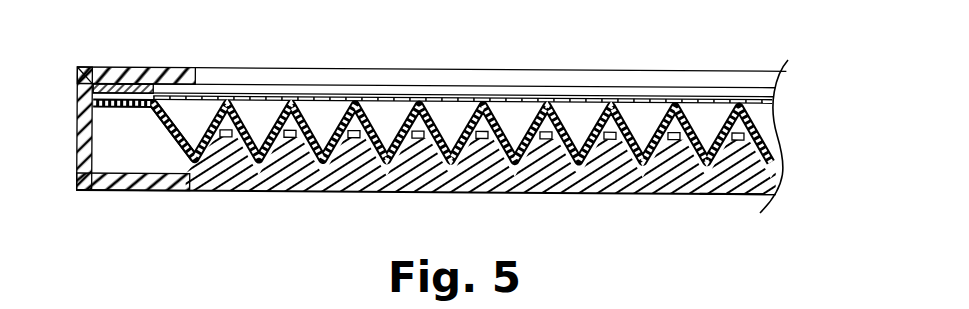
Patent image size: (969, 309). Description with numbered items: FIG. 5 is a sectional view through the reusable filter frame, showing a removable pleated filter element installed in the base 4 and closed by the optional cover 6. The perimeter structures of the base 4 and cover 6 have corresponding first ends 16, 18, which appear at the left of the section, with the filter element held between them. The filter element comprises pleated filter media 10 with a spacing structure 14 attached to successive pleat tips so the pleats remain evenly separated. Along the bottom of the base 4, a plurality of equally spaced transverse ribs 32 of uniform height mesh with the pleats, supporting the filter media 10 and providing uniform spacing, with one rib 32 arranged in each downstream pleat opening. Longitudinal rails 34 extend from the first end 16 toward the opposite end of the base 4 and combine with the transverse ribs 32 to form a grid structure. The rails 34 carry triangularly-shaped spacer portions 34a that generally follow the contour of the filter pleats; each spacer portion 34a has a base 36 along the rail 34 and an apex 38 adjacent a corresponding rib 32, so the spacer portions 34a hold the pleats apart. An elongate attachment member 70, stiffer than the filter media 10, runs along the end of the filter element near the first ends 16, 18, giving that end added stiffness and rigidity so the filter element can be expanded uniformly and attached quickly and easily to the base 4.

The base 4 is at (180, 190).
The cover 6 is at (302, 67).
The filter media 10 is at (176, 134).
The spacing structure 14 is at (481, 98).
The first end 16 is at (78, 179).
The first end 18 is at (77, 133).
The transverse ribs 32 is at (372, 130).
The longitudinal rails 34 is at (355, 180).
The spacer portions 34a is at (780, 156).
The base 36 is at (755, 179).
The apex 38 is at (765, 135).
The elongate attachment members 70 is at (140, 90).